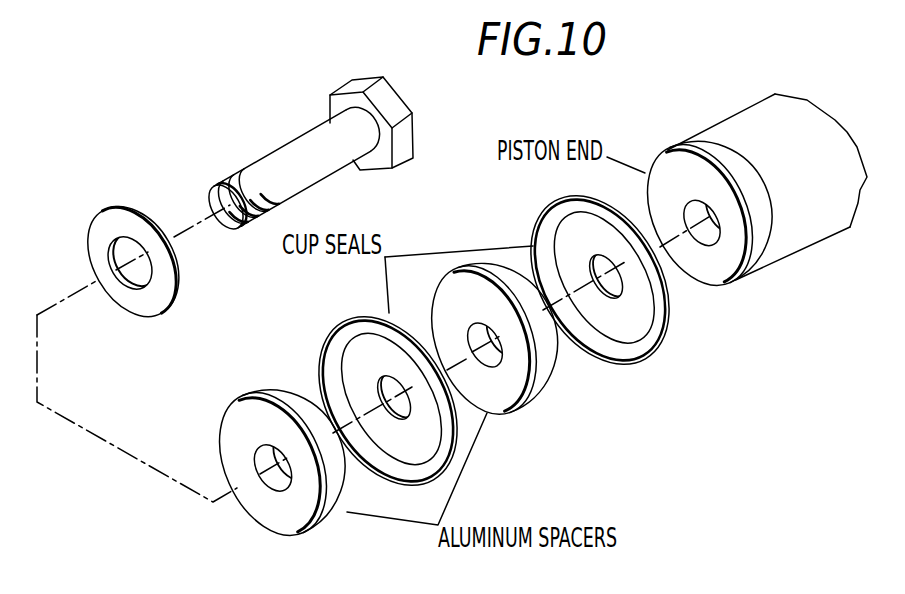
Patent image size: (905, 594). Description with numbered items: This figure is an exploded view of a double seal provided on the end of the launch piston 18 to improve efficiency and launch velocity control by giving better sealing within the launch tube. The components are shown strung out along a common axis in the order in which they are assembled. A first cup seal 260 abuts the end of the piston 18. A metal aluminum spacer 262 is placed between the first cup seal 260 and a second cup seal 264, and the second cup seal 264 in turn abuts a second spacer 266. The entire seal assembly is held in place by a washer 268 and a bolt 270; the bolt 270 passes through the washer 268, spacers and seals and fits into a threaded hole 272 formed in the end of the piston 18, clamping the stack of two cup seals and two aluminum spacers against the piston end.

The launch piston 18 is at (747, 194).
The first cup seal 260 is at (647, 360).
The metal (aluminum) spacer 262 is at (527, 410).
The second cup seal 264 is at (347, 318).
The second spacer 266 is at (310, 532).
The washer 268 is at (128, 207).
The bolt 270 is at (297, 152).
The threaded hole 272 is at (755, 270).